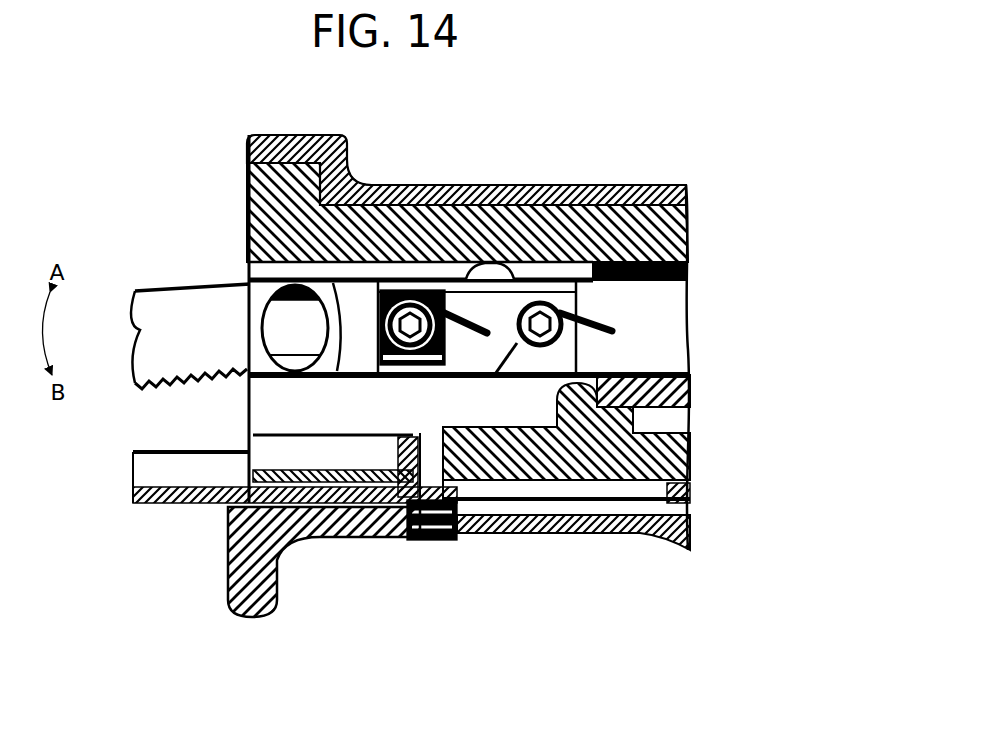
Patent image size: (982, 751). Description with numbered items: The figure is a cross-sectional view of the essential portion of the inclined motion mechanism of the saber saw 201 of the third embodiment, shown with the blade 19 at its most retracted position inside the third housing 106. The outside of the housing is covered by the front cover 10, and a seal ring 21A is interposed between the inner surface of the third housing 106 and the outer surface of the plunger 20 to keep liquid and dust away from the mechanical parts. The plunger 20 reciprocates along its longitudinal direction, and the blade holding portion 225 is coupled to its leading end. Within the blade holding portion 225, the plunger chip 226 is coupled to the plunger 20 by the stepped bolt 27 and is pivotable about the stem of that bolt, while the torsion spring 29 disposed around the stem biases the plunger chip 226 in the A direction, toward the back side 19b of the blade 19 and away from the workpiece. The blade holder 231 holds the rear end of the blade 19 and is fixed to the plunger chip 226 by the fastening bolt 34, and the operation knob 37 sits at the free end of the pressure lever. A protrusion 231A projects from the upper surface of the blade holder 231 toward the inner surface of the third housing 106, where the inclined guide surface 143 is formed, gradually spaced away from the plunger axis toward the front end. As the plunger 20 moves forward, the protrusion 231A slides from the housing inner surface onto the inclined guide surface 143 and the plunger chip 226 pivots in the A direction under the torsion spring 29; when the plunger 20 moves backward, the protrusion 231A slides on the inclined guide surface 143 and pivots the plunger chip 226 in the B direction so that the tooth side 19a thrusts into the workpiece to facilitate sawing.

The front cover 10 is at (350, 163).
The seal ring 21A is at (638, 185).
The third housing 106 is at (680, 233).
The inclined guide surface 143 is at (270, 253).
The plunger 20 is at (653, 340).
The blade holder 231 is at (458, 278).
The protrusion 231A is at (500, 266).
The fastening bolt 34 is at (410, 330).
The stepped bolt 27 is at (545, 287).
The torsion spring 29 is at (585, 312).
The operation knob 37 is at (288, 337).
The blade 19 is at (147, 325).
The back side 19b is at (147, 287).
The tooth side 19a is at (173, 385).
The blade holding portion 225 is at (337, 397).
The plunger chip 226 is at (473, 357).
The saber saw 201 is at (668, 580).